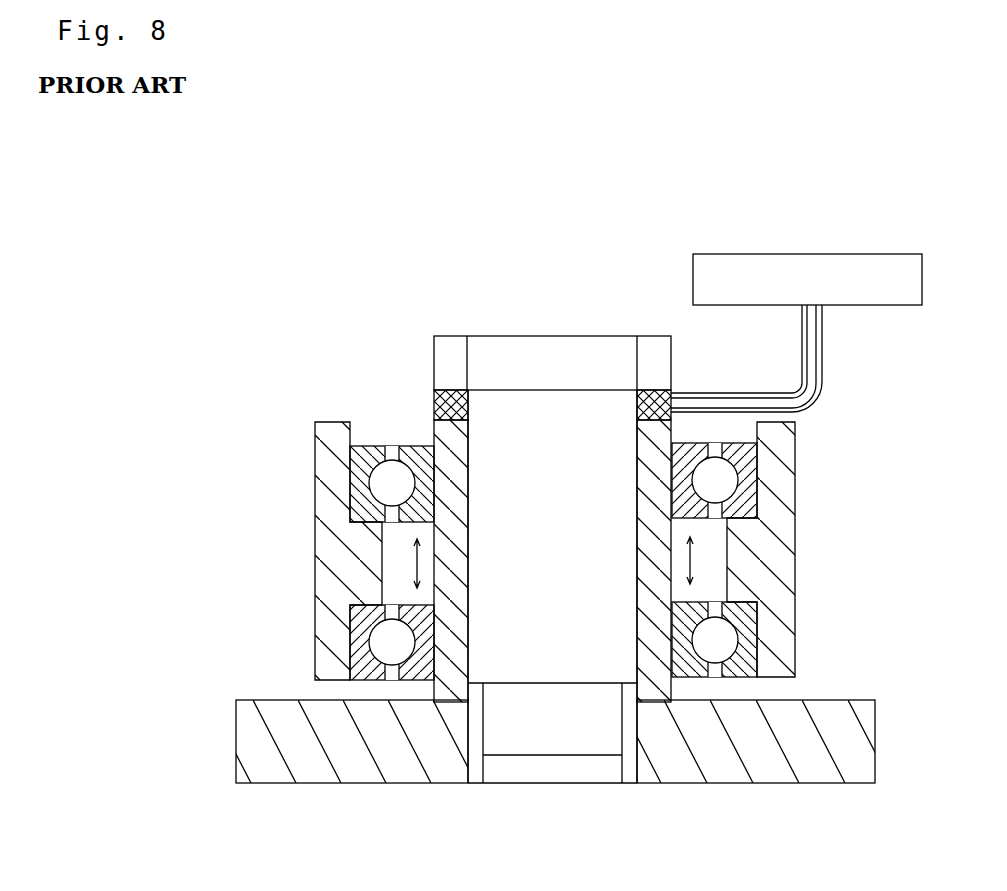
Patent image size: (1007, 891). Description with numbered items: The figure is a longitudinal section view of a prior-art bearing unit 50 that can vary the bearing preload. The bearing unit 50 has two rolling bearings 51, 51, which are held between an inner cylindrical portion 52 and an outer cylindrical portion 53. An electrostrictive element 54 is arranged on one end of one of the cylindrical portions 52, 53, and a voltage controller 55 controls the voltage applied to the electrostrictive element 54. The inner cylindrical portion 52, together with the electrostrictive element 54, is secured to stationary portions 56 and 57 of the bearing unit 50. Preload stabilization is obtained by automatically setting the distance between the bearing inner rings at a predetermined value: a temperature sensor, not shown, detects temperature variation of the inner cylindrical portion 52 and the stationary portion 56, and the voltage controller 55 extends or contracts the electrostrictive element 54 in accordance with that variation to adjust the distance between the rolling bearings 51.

The bearing unit 50 is at (824, 458).
The rolling bearing 51 is at (360, 457).
The inner cylindrical portion 52 is at (443, 435).
The outer cylindrical portion 53 is at (325, 551).
The electrostrictive element 54 is at (657, 413).
The voltage controller 55 is at (880, 305).
The stationary portion 56 is at (539, 405).
The stationary portion 57 is at (762, 770).